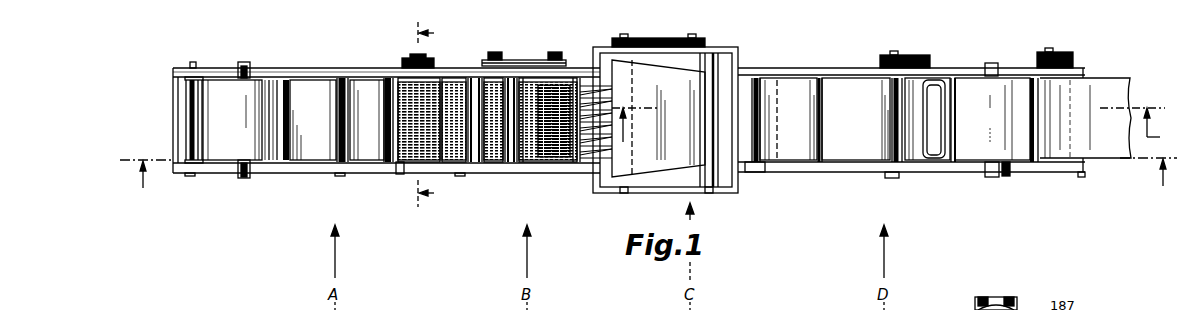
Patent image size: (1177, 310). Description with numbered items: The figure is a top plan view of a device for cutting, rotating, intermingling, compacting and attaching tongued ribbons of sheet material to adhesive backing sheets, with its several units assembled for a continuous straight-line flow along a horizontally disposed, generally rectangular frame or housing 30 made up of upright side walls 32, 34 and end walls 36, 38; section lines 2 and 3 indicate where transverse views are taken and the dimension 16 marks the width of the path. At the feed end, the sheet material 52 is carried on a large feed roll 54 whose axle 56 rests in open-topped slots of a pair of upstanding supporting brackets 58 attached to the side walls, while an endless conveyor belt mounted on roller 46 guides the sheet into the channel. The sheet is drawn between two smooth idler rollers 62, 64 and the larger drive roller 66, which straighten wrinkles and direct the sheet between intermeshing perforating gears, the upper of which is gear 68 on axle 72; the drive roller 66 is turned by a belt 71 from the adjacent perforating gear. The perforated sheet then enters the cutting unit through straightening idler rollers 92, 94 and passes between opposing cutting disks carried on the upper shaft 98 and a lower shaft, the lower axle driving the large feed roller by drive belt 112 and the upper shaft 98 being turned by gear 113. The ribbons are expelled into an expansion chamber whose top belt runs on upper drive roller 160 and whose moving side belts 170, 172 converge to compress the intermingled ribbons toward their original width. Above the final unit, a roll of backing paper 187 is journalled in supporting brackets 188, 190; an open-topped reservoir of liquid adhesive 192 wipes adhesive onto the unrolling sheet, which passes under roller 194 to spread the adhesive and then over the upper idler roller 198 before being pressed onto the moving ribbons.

The section line 2- 2 is at (647, 180).
The section line 3- 3 is at (431, 115).
The width dimension 16 is at (890, 129).
The frame or housing 30 is at (470, 58).
The side wall 32 is at (284, 70).
The side wall 34 is at (296, 174).
The end wall 36 is at (173, 115).
The end wall 38 is at (1085, 173).
The roller 46 is at (188, 66).
The sheet material 52 is at (322, 122).
The feed roll 54 is at (246, 114).
The axle 56 is at (246, 178).
The supporting brackets 58 is at (250, 67).
The smooth roller 62 is at (337, 77).
The smooth roller 64 is at (376, 70).
The drive roller 66 is at (358, 165).
The perforating gear or roller 68 is at (450, 68).
The belt 71 is at (390, 62).
The axle 72 is at (412, 173).
The straightening roller 92 is at (473, 163).
The straightening roller 94 is at (510, 163).
The shaft 98 is at (556, 165).
The drive belt 112 is at (523, 62).
The gear 113 is at (566, 76).
The drive roller 160 is at (722, 56).
The moving belt 170 is at (755, 67).
The moving belt 172 is at (760, 173).
The roll of backing paper 187 is at (1000, 124).
The supporting bracket 188 is at (997, 65).
The supporting bracket 190 is at (1012, 173).
The reservoir of liquid adhesive 192 is at (905, 152).
The roller 194 is at (884, 173).
The upper idler roller 198 is at (788, 93).